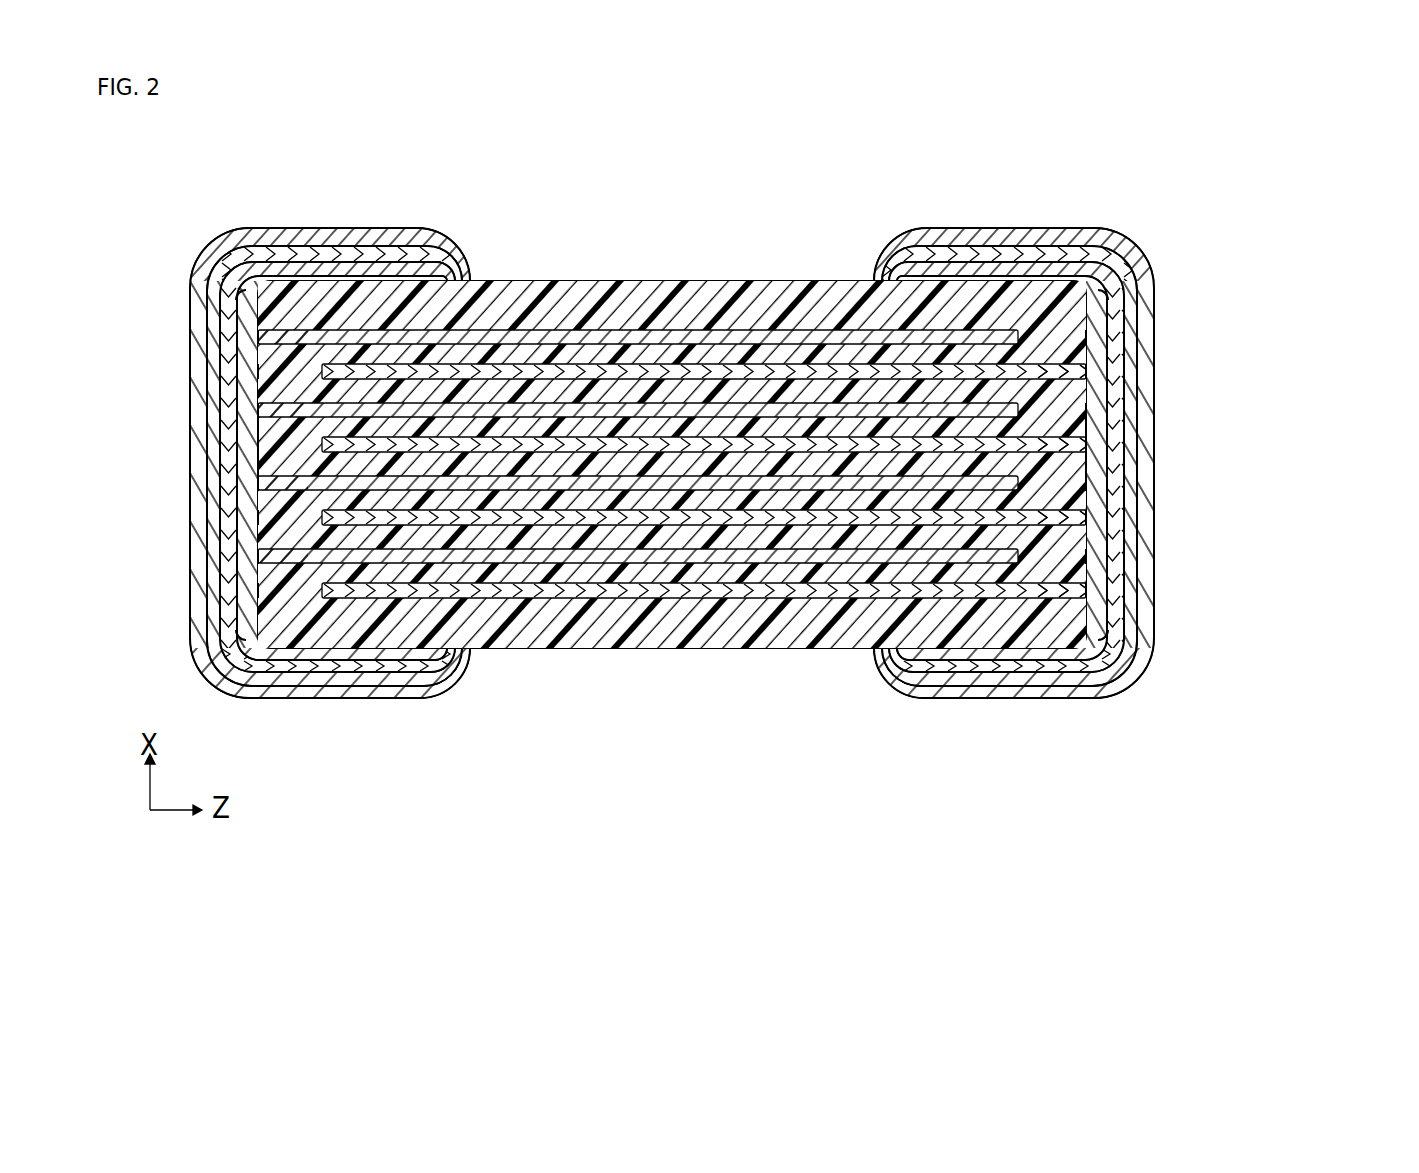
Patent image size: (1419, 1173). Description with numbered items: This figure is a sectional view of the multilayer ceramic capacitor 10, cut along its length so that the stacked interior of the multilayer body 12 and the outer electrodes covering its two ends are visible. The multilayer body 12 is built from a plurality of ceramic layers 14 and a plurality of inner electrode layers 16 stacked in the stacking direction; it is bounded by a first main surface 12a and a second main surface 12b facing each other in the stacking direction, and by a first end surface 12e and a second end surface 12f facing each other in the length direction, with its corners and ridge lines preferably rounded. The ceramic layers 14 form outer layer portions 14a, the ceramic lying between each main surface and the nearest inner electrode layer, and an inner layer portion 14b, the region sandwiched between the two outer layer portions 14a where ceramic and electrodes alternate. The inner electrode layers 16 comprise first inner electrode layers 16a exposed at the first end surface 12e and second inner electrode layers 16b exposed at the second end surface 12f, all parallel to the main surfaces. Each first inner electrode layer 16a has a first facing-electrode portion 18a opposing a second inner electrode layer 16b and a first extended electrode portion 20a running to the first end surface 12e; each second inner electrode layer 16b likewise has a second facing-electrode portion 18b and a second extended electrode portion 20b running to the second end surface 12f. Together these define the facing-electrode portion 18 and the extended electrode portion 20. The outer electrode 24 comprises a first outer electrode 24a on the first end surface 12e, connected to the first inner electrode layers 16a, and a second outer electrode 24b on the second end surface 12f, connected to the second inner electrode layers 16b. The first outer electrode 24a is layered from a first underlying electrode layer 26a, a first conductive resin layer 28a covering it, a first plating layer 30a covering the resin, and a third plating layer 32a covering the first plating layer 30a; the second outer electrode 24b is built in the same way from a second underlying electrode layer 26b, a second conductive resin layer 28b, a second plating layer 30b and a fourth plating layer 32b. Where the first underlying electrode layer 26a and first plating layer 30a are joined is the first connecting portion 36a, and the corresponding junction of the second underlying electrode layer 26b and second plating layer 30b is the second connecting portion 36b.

The multilayer ceramic capacitor 10 is at (163, 170).
The multilayer body 12 is at (848, 283).
The first main surface 12a is at (805, 279).
The second main surface 12b is at (845, 650).
The first end surface 12e is at (257, 578).
The second end surface 12f is at (1090, 468).
The ceramic layers 14 is at (673, 549).
The outer layer portions 14a is at (677, 300).
The inner layer portion 14b is at (752, 372).
The inner electrode layers 16 is at (810, 888).
The first inner electrode layers 16a is at (492, 405).
The second inner electrode layers 16b is at (543, 372).
The facing-electrode portion 18 is at (973, 888).
The first facing-electrode portion 18a is at (578, 352).
The second facing-electrode portion 18b is at (612, 392).
The extended electrode portion 20 is at (1135, 888).
The first extended electrode portion 20a is at (262, 405).
The second extended electrode portion 20b is at (1083, 440).
The outer electrode 24 is at (1353, 642).
The first outer electrode 24a is at (288, 427).
The second outer electrode 24b is at (1073, 427).
The first underlying electrode layer 26a is at (248, 440).
The second underlying electrode layer 26b is at (1100, 362).
The first conductive resin layer 28a is at (277, 268).
The second conductive resin layer 28b is at (1070, 268).
The first plating layer 30a is at (313, 252).
The second plating layer 30b is at (1017, 252).
The third plating layer 32a is at (385, 237).
The fourth plating layer 32b is at (958, 237).
The first connecting portion 36a is at (243, 295).
The second connecting portion 36b is at (1111, 295).